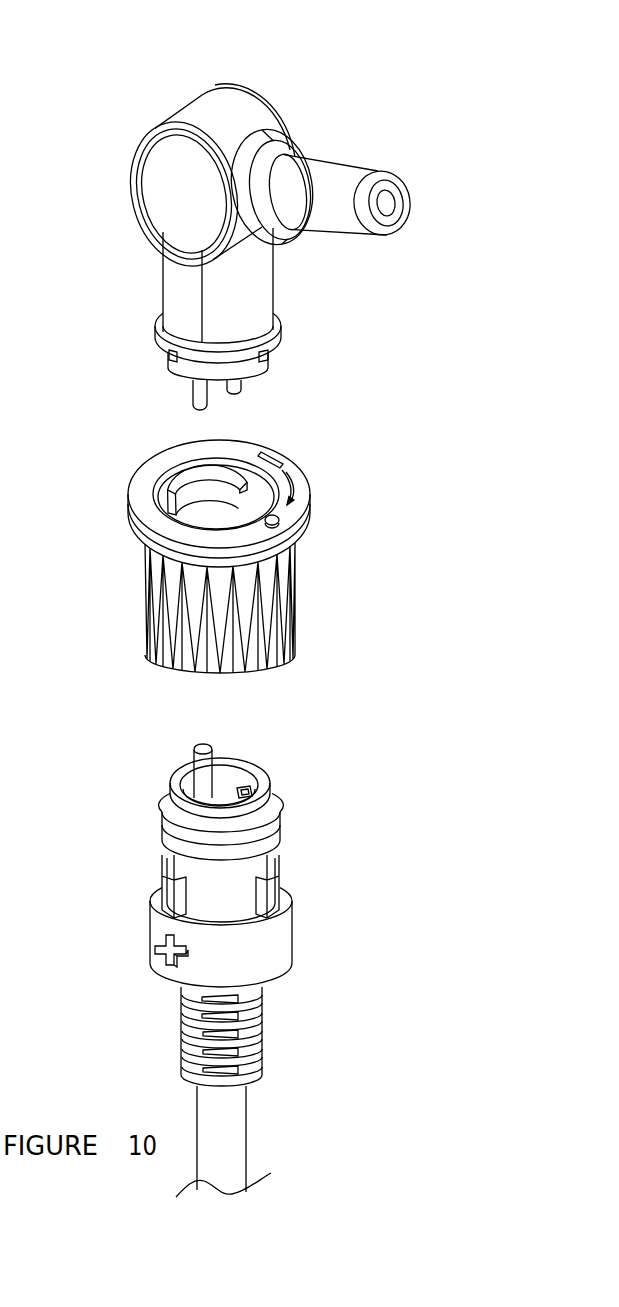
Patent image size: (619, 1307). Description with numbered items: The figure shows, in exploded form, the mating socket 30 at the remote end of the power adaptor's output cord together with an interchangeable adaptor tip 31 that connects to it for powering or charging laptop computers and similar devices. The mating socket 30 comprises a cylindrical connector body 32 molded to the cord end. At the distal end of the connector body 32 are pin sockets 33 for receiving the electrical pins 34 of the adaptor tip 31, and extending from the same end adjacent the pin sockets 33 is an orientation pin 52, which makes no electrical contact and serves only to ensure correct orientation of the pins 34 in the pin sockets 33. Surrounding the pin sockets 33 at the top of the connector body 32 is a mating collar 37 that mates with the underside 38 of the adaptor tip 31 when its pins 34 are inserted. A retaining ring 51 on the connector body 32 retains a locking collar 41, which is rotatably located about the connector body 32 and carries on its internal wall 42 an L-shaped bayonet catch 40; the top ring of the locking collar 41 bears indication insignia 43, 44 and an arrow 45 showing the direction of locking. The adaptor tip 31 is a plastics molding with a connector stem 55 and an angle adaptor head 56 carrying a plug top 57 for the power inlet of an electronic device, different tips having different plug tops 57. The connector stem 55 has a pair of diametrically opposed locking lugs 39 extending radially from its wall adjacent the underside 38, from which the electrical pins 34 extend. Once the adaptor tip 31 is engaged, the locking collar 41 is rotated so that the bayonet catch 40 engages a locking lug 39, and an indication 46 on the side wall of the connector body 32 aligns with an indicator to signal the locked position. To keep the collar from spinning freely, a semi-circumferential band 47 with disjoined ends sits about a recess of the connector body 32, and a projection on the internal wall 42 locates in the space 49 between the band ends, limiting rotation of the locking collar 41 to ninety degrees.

The mating socket 30 is at (367, 985).
The interchangeable adaptor tip 31 is at (282, 62).
The connector body 32 is at (250, 968).
The pin sockets 33 is at (243, 792).
The electrical pins 34 is at (205, 393).
The mating collar 37 is at (167, 788).
The underside 38 is at (180, 367).
The locking lugs 39 is at (272, 360).
The L-shaped bayonet catch 40 is at (183, 478).
The locking collar 41 is at (152, 510).
The internal wall 42 is at (218, 506).
The indication insignia 43 is at (282, 455).
The indication insignia 44 is at (279, 522).
The arrow 45 is at (297, 487).
The indication 46 is at (155, 960).
The semi-circumferential band 47 is at (162, 890).
The space 49 is at (228, 895).
The retaining ring 51 is at (270, 835).
The orientation pin 52 is at (193, 765).
The connector stem 55 is at (180, 292).
The angle adaptor head 56 is at (173, 198).
The plug top 57 is at (330, 183).